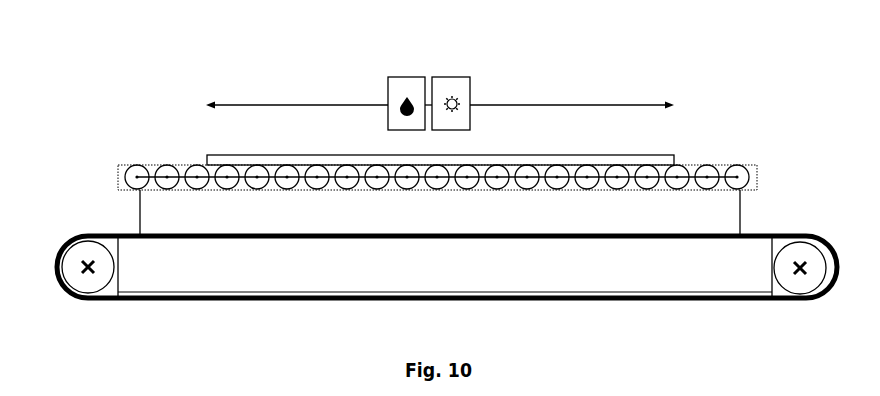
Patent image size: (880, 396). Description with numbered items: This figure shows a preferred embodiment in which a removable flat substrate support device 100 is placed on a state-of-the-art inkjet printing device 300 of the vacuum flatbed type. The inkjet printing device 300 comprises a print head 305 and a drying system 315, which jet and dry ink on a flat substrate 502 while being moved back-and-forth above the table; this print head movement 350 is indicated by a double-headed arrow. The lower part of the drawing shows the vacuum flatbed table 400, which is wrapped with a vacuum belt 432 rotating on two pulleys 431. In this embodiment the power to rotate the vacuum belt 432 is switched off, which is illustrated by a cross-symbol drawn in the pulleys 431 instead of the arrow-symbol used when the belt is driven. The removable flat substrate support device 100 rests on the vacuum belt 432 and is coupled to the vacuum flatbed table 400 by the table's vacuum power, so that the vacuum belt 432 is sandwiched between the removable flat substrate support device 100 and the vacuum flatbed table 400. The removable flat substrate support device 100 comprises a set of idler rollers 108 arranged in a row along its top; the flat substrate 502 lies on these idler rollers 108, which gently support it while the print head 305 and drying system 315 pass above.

The removable flat substrate support device 100 is at (147, 205).
The set of idler rollers 108 is at (118, 166).
The inkjet printing device 300 is at (574, 78).
The print head 305 is at (413, 86).
The drying system 315 is at (463, 84).
The print head movement 350 is at (265, 107).
The vacuum flatbed table 400 is at (447, 266).
The pulley 431 is at (88, 277).
The vacuum belt 432 is at (313, 298).
The flat substrate 502 is at (228, 156).